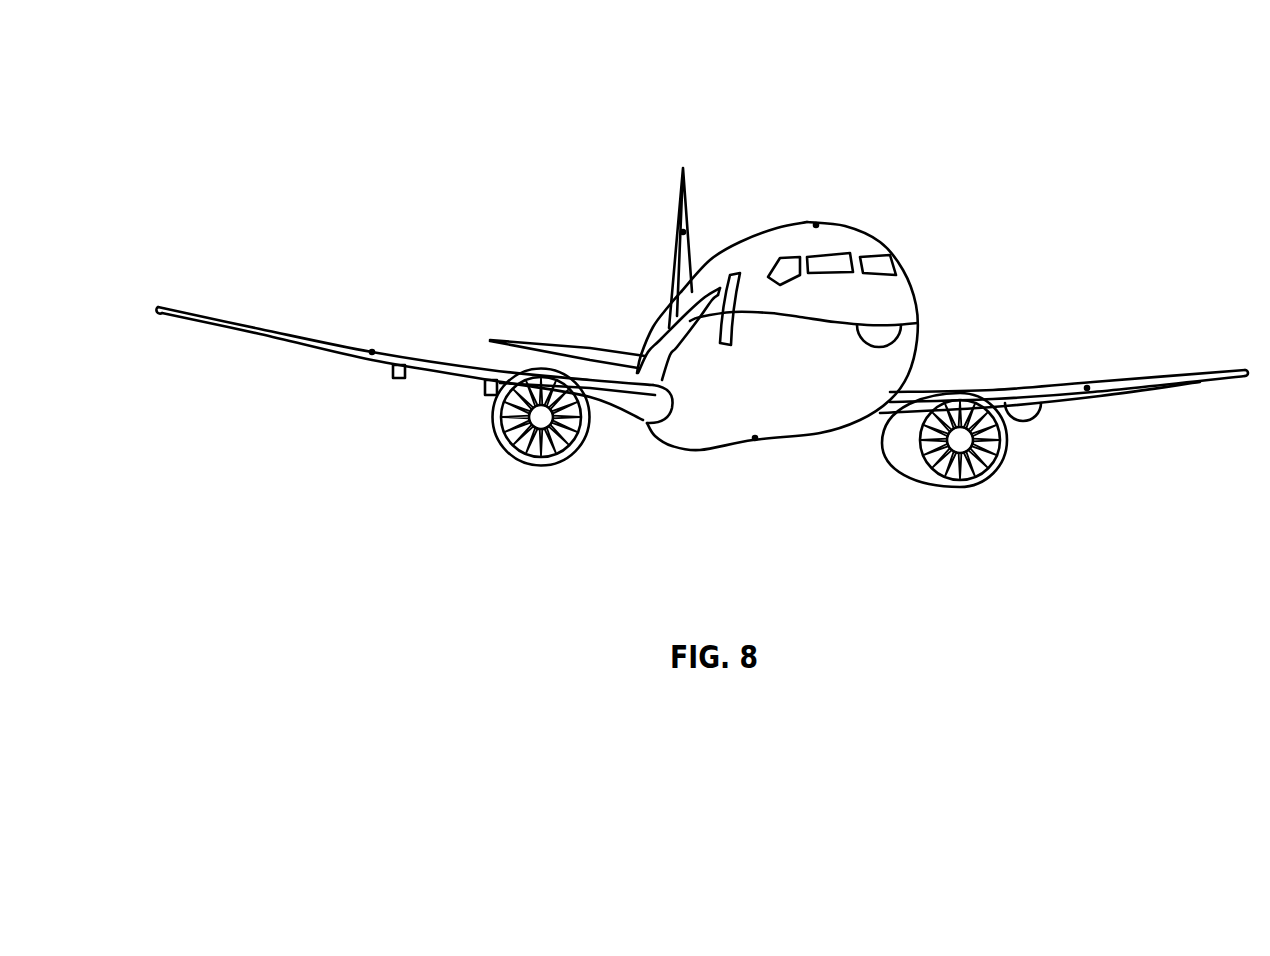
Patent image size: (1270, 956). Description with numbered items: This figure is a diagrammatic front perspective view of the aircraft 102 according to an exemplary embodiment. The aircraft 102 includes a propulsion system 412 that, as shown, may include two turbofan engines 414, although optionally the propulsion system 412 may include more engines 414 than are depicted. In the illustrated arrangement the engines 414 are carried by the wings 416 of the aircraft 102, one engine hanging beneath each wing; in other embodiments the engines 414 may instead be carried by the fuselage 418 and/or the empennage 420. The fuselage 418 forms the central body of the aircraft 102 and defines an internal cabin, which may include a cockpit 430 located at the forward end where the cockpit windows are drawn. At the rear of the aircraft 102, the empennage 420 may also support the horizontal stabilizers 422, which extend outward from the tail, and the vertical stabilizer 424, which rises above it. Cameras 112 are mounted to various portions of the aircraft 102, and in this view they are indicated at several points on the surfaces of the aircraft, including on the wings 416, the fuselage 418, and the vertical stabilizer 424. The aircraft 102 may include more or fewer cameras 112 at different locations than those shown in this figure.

The aircraft 102 is at (429, 109).
The cameras 112 is at (683, 232).
The propulsion system 412 is at (1054, 479).
The turbofan engines 414 is at (541, 467).
The wings 416 is at (303, 332).
The fuselage 418 is at (913, 288).
The empennage 420 is at (669, 322).
The horizontal stabilizers 422 is at (532, 342).
The vertical stabilizer 424 is at (680, 210).
The cockpit 430 is at (882, 265).